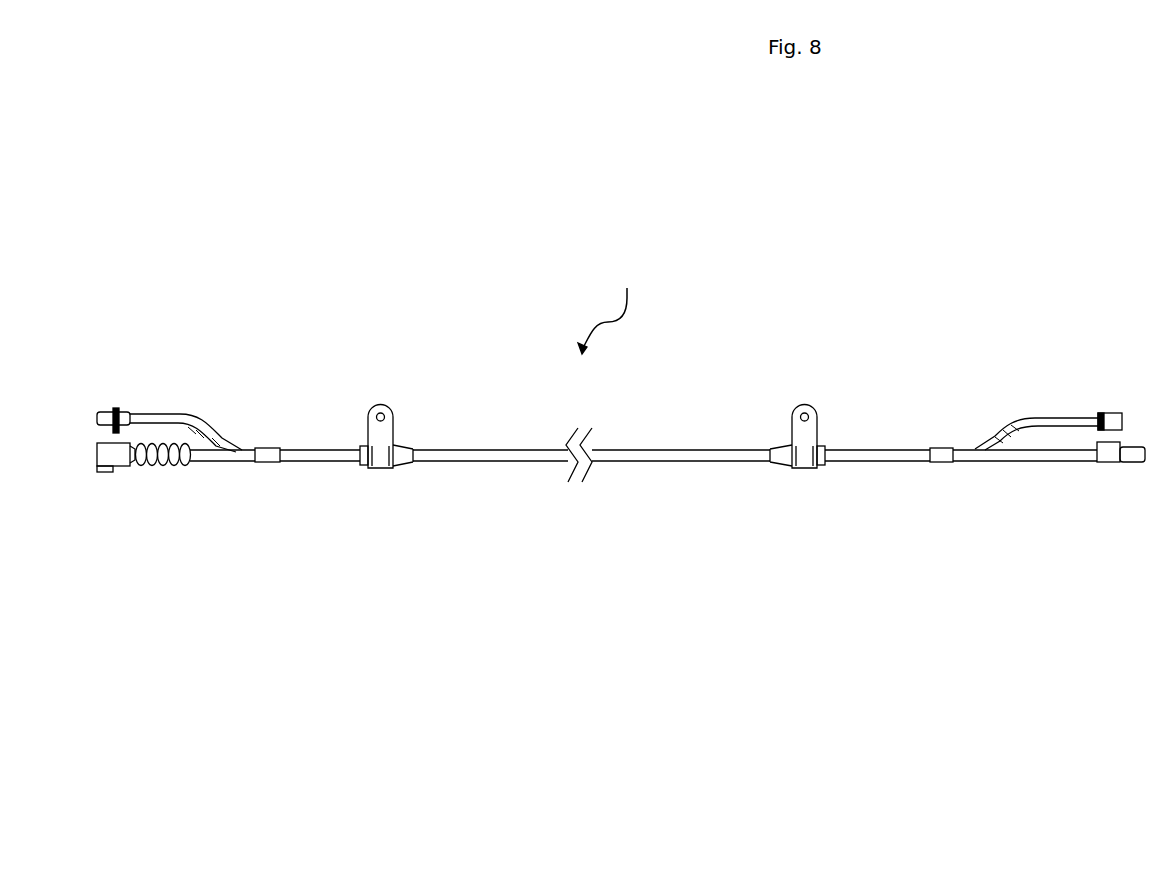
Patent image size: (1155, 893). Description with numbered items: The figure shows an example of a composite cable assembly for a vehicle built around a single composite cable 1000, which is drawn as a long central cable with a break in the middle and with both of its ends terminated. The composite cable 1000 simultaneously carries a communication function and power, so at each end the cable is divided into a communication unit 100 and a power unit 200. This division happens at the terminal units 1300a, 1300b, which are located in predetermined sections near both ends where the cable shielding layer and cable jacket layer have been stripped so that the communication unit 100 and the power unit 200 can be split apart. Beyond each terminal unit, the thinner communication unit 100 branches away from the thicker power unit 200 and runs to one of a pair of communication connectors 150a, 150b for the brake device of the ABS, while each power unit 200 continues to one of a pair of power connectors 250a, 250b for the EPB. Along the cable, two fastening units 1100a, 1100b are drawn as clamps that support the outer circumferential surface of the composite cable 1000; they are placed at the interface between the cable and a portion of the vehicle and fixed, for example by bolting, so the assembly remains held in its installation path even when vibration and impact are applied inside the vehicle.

The composite cable 1000 is at (658, 446).
The communication unit 100 is at (196, 412).
The power unit 200 is at (215, 462).
The communication connector 150a is at (103, 412).
The communication connector 150b is at (1102, 412).
The power connector 250a is at (115, 468).
The power connector 250b is at (1110, 462).
The fastening unit 1100a is at (374, 470).
The fastening unit 1100b is at (800, 470).
The terminal unit 1300a is at (262, 462).
The terminal unit 1300b is at (942, 462).